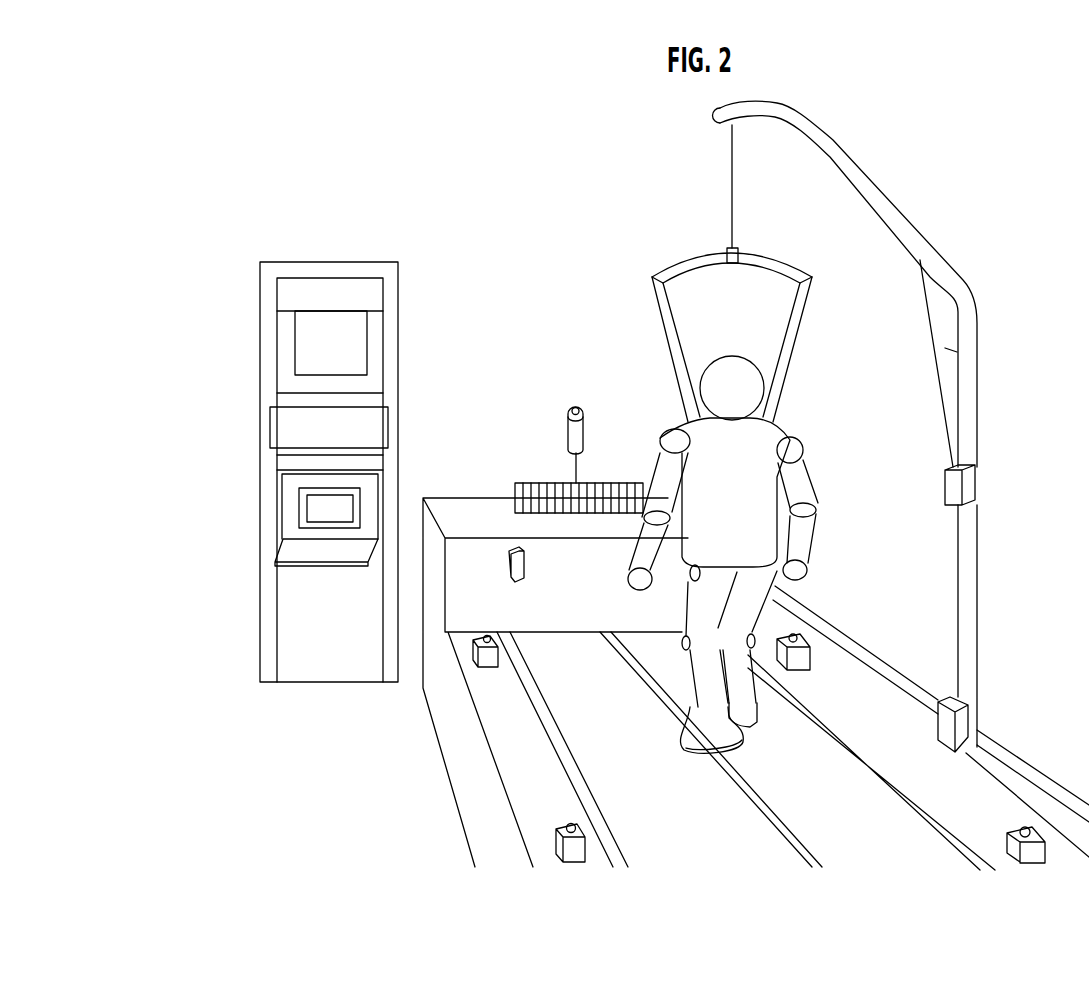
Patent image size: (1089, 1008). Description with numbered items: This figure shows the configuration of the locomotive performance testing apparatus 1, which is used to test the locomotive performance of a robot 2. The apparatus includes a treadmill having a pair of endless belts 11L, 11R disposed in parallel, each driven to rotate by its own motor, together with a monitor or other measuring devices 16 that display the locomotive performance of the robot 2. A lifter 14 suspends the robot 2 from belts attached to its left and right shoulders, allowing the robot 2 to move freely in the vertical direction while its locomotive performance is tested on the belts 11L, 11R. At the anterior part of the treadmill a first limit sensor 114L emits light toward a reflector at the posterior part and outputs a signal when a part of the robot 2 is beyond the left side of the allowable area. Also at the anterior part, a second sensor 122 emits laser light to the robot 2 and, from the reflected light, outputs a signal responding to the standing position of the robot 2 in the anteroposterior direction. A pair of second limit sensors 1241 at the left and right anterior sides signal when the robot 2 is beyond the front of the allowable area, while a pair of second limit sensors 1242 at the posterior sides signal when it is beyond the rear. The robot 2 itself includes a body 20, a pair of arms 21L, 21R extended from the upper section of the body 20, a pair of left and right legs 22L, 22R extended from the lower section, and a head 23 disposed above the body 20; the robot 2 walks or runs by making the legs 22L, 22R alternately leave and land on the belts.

The locomotive performance testing apparatus 1 is at (507, 477).
The left endless belt 11L is at (685, 815).
The right endless belt 11R is at (853, 815).
The first limit sensor 114L is at (507, 549).
The second sensor 122 is at (555, 413).
The second limit sensor 1241 is at (492, 667).
The second limit sensor 1242 is at (557, 829).
The lifter 14 is at (960, 245).
The measuring devices 16 is at (245, 348).
The robot 2 is at (737, 500).
The body 20 is at (747, 513).
The left arm 21L is at (660, 476).
The right arm 21R is at (803, 484).
The left leg 22L is at (710, 678).
The right leg 22R is at (740, 678).
The head 23 is at (735, 356).